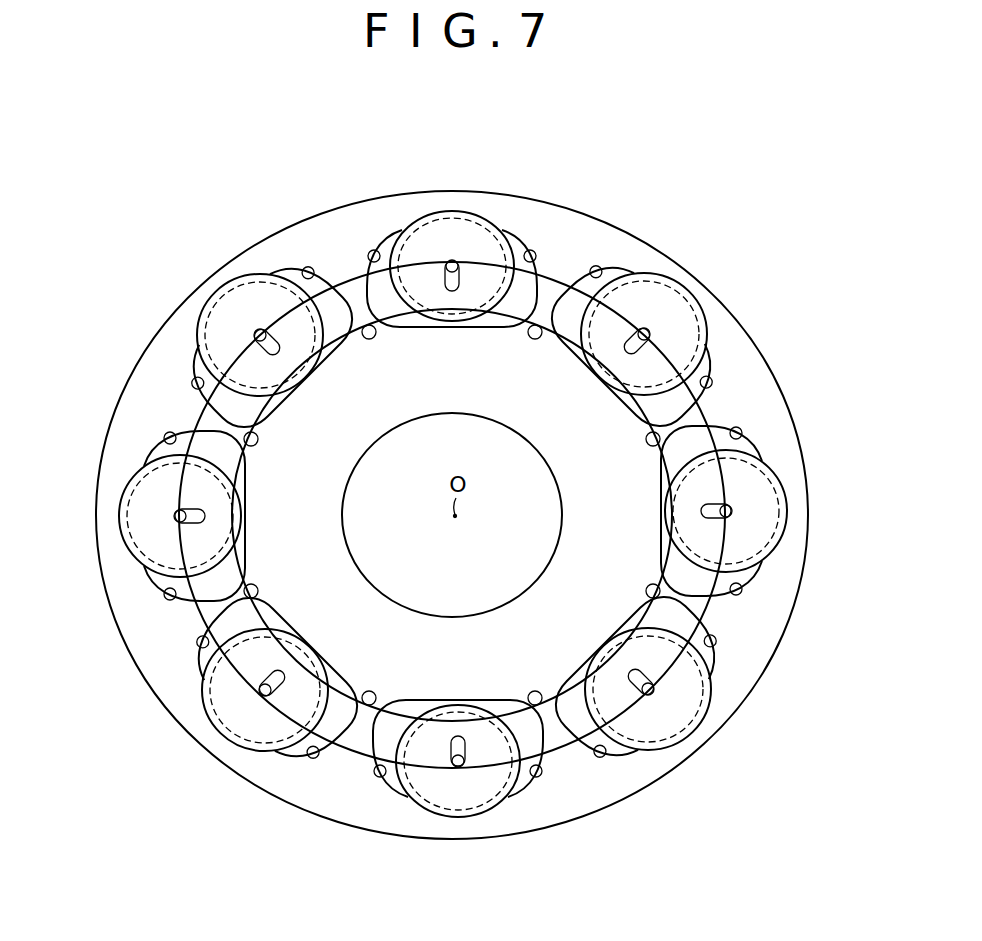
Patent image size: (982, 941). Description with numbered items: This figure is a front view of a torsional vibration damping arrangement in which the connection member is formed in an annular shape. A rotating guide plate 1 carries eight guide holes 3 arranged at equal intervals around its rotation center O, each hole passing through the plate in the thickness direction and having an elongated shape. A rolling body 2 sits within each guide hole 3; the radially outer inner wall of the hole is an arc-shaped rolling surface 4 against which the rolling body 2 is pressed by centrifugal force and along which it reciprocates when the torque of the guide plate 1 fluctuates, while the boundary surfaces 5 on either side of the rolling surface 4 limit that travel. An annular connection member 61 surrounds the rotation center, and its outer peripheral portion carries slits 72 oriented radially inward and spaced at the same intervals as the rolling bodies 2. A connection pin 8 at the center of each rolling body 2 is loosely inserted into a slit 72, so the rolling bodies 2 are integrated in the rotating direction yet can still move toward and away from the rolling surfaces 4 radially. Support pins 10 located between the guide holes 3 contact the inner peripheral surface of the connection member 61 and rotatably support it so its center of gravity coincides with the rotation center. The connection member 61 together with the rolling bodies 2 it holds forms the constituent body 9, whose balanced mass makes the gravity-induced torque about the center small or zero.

The guide plate 1 is at (570, 215).
The rolling body 2 is at (416, 225).
The guide hole 3 is at (500, 236).
The rolling surface 4 is at (440, 212).
The boundary surface 5 is at (530, 256).
The connection pin 8 is at (452, 260).
The constituent body 9 is at (752, 424).
The support pin 10 is at (369, 340).
The connection member 61 is at (645, 412).
The slit 72 is at (452, 290).